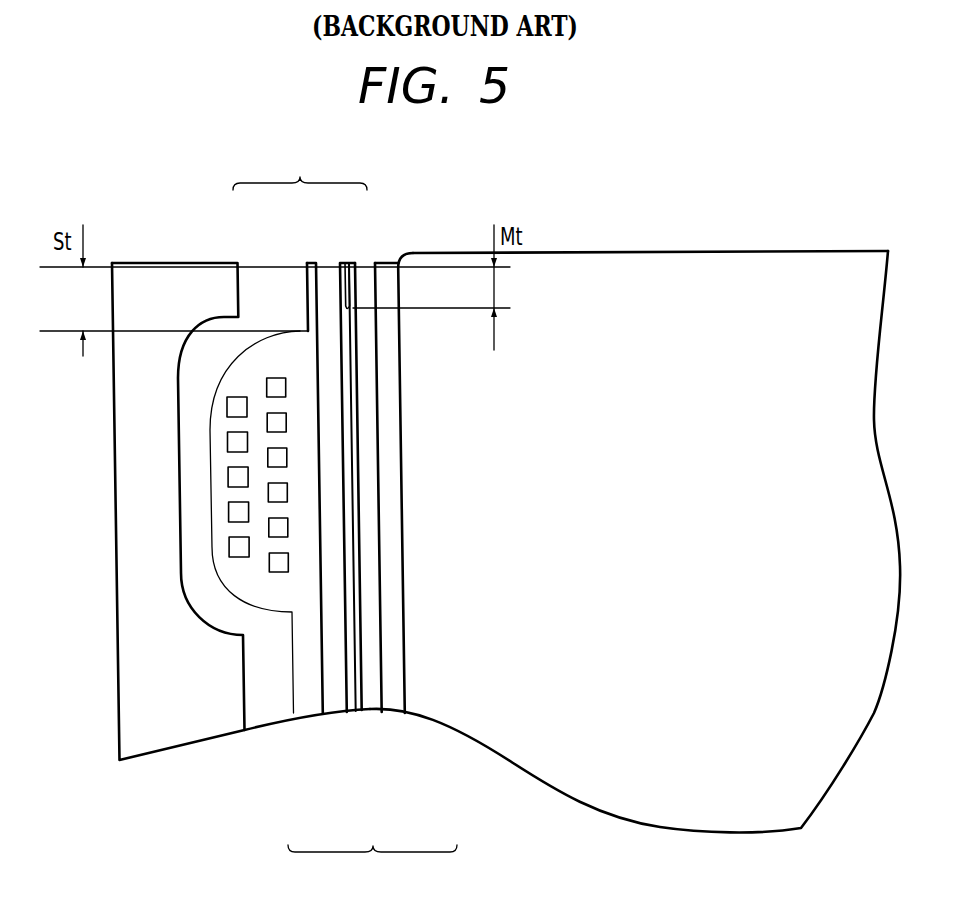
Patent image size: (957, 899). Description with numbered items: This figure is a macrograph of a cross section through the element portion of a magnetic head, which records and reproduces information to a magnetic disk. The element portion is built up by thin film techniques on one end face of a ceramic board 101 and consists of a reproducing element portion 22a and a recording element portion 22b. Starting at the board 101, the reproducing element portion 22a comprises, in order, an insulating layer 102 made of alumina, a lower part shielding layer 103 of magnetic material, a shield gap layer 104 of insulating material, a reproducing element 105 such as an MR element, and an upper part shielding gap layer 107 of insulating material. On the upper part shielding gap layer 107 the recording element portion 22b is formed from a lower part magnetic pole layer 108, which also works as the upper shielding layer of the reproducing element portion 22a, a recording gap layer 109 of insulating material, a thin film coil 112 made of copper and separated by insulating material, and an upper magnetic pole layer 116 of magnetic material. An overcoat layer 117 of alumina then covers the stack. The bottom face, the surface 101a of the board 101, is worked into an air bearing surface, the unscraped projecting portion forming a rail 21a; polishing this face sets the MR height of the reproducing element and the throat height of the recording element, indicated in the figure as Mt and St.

The rail 21a is at (165, 262).
The reproducing element portion 22a is at (372, 867).
The recording element portion 22b is at (300, 169).
The ceramic board 101 is at (669, 817).
The surface of the board 101a is at (753, 252).
The insulating layer 102 is at (395, 703).
The lower part shielding layer 103 is at (373, 703).
The shield gap layer 104 is at (358, 703).
The reproducing element 105 is at (347, 262).
The upper part shielding gap layer 107 is at (349, 703).
The lower part magnetic pole layer 108 is at (327, 275).
The recording gap layer 109 is at (305, 703).
The thin film coil 112 is at (276, 377).
The upper magnetic pole layer 116 is at (263, 278).
The overcoat layer 117 is at (125, 445).